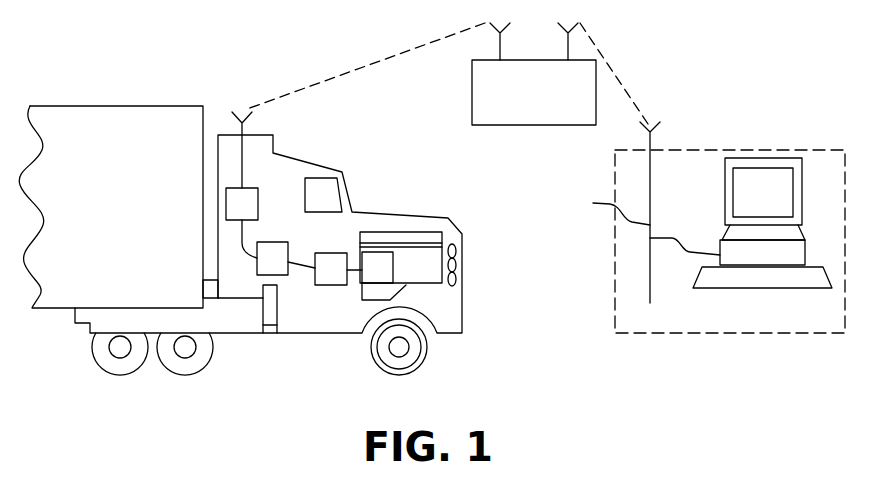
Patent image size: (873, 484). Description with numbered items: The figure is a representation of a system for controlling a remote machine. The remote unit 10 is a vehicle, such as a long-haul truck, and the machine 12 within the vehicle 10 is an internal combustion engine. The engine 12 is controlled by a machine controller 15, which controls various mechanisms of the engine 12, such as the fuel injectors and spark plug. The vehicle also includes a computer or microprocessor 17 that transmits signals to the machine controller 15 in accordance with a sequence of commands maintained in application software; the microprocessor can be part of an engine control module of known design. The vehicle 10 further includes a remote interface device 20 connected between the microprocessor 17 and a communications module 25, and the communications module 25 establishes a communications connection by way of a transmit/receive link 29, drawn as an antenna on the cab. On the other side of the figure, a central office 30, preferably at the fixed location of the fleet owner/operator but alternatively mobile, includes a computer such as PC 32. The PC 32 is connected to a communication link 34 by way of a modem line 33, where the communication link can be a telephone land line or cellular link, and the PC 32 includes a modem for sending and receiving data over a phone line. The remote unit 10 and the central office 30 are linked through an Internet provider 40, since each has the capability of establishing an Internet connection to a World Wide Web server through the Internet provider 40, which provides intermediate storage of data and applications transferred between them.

The remote unit 10 is at (413, 215).
The machine 12 is at (437, 285).
The machine controller 15 is at (373, 283).
The microprocessor 17 is at (332, 285).
The remote interface device 20 is at (272, 242).
The communications module 25 is at (226, 205).
The transmit/receive link 29 is at (248, 127).
The central office 30 is at (735, 152).
The PC 32 is at (755, 262).
The modem line 33 is at (678, 235).
The communication link 34 is at (606, 209).
The Internet provider 40 is at (534, 125).